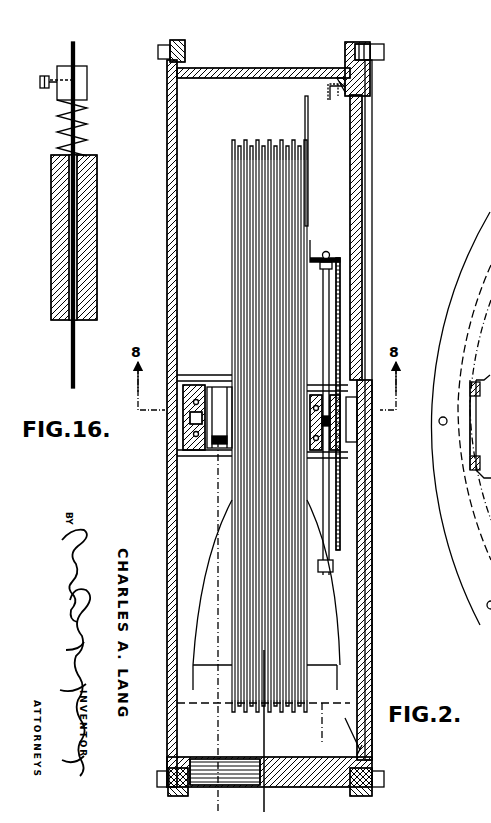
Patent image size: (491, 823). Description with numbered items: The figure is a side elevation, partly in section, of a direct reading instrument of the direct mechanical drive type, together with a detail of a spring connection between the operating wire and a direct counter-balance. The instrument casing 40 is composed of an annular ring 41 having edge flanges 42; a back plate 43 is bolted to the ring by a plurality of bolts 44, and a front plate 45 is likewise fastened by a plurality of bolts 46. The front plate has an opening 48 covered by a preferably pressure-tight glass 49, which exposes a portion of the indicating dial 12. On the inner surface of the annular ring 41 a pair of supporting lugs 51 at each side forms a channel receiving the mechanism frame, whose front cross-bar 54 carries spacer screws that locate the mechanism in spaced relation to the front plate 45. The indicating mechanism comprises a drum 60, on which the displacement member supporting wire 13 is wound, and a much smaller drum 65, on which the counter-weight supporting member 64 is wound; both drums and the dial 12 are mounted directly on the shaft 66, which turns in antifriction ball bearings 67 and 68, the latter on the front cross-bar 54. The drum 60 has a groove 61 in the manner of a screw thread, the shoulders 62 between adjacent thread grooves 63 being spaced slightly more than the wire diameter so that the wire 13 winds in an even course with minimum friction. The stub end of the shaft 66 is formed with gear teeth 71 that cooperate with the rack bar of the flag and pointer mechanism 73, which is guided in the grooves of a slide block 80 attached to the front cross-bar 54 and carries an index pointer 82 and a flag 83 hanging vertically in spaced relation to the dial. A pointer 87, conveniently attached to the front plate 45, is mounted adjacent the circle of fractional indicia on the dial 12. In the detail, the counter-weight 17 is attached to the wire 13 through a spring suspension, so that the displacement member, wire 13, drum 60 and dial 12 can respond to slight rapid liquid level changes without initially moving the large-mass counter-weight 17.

In FIG. 2, the indicating dial 12 is at (305, 108).
In FIG. 16, the displacement member supporting wire 13 is at (75, 352).
In FIG. 2, the displacement member supporting wire 13 is at (267, 730).
In FIG. 16, the counter-weight 17 is at (90, 230).
In FIG. 2, the instrument casing 40 is at (205, 172).
In FIG. 2, the annular ring 41 is at (262, 70).
In FIG. 2, the edge flanges 42 is at (188, 64).
In FIG. 2, the back plate 43 is at (167, 657).
In FIG. 2, the bolts 44 is at (160, 52).
In FIG. 2, the front plate 45 is at (368, 84).
In FIG. 2, the bolts 46 is at (384, 52).
In FIG. 2, the opening 48 is at (363, 116).
In FIG. 2, the glass 49 is at (357, 150).
In FIG. 2, the supporting lugs 51 is at (190, 377).
In FIG. 2, the front cross-bar 54 is at (352, 522).
In FIG. 2, the drum 60 is at (268, 212).
In FIG. 2, the groove 61 is at (240, 142).
In FIG. 2, the shoulders 62 is at (268, 142).
In FIG. 2, the thread grooves 63 is at (294, 142).
In FIG. 2, the counter-weight supporting member 64 is at (226, 525).
In FIG. 2, the smaller drum 65 is at (218, 446).
In FIG. 2, the shaft 66 is at (192, 428).
In FIG. 2, the antifriction ball bearing 67 is at (185, 460).
In FIG. 2, the antifriction ball bearing 68 is at (314, 458).
In FIG. 2, the gear teeth 71 is at (345, 435).
In FIG. 2, the flag and pointer mechanism 73 is at (332, 332).
In FIG. 2, the slide block 80 is at (338, 460).
In FIG. 2, the index pointer 82 is at (322, 232).
In FIG. 2, the flag 83 is at (340, 290).
In FIG. 2, the pointer 87 is at (329, 103).